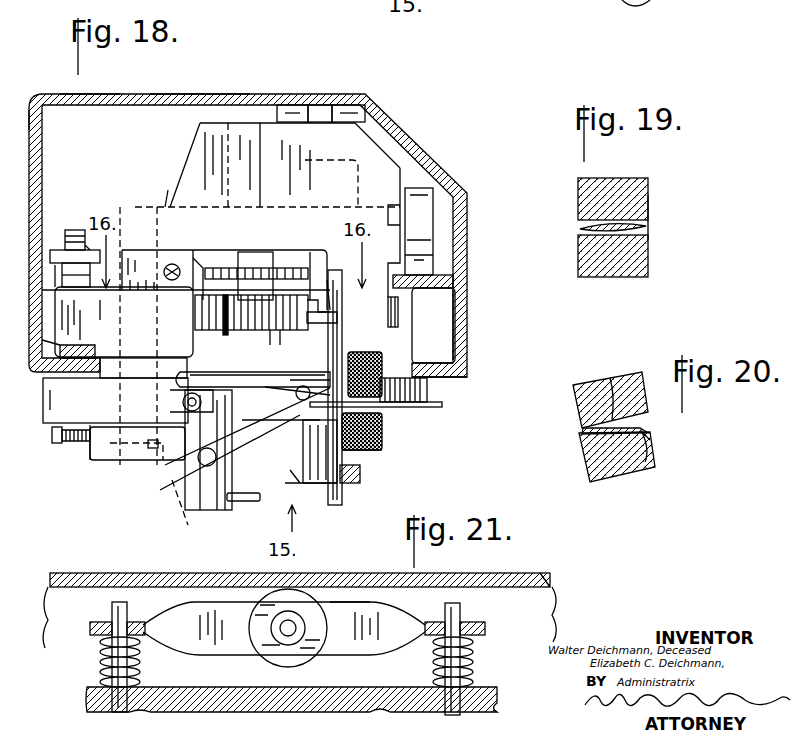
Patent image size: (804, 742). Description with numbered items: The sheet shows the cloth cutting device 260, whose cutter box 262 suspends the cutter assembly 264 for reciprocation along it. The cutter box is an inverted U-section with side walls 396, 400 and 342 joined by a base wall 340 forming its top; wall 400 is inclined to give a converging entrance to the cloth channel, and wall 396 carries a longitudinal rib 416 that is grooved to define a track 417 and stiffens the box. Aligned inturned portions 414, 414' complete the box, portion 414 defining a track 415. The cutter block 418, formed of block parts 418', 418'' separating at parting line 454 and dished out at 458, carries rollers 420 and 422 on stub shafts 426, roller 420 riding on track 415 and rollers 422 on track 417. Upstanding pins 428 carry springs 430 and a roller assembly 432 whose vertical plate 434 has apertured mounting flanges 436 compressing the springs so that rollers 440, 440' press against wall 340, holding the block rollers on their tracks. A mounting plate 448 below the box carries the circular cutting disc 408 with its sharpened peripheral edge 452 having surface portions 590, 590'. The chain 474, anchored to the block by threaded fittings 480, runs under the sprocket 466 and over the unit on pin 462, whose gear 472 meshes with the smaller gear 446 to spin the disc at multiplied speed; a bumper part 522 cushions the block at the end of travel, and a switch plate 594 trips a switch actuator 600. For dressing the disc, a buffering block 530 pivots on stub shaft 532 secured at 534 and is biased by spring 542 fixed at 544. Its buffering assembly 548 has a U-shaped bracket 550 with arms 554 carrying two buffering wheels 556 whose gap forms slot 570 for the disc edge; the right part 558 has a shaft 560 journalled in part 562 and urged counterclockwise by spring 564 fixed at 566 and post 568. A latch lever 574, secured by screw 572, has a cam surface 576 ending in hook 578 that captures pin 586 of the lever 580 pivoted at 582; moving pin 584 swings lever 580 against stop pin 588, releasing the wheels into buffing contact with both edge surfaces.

In FIG. 18, the cloth cutting device 260 is at (405, 100).
In FIG. 21, the cloth cutting device 260 is at (568, 584).
In FIG. 18, the cutter box 262 is at (73, 91).
In FIG. 21, the cutter box 262 is at (88, 572).
In FIG. 18, the cutter assembly 264 is at (163, 197).
In FIG. 21, the cutter assembly 264 is at (83, 706).
In FIG. 18, the base wall 340 is at (172, 92).
In FIG. 18, the side wall 342 is at (27, 110).
In FIG. 18, the wall of cutter box 396 is at (460, 350).
In FIG. 18, the inclined wall portion 400 is at (404, 160).
In FIG. 18, the circular cutting disc 408 is at (420, 403).
In FIG. 18, the inturned portion 414 is at (50, 369).
In FIG. 18, the inturned portion 414' is at (462, 371).
In FIG. 18, the track 415 is at (70, 352).
In FIG. 18, the longitudinal rib 416 is at (458, 282).
In FIG. 18, the track 417 is at (430, 262).
In FIG. 18, the cutter block 418 is at (418, 142).
In FIG. 18, the block part 418' is at (181, 162).
In FIG. 18, the block part 418'' is at (186, 322).
In FIG. 18, the roller 420 is at (68, 280).
In FIG. 18, the roller 422 is at (440, 190).
In FIG. 18, the stub shaft 426 is at (392, 215).
In FIG. 21, the upstanding pin 428 is at (112, 640).
In FIG. 21, the spring 430 is at (154, 672).
In FIG. 21, the roller assembly 432 is at (376, 600).
In FIG. 21, the vertical plate 434 is at (372, 630).
In FIG. 21, the apertured mounting flange 436 is at (140, 625).
In FIG. 18, the roller 440 is at (304, 90).
In FIG. 18, the roller 440' is at (350, 87).
In FIG. 21, the roller 440' is at (299, 603).
In FIG. 18, the gear 446 is at (398, 312).
In FIG. 18, the mounting plate 448 is at (395, 378).
In FIG. 19, the sharpened peripheral edge 452 is at (645, 218).
In FIG. 20, the sharpened peripheral edge 452 is at (640, 430).
In FIG. 18, the parting line 454 is at (200, 262).
In FIG. 18, the dished out portion 458 is at (225, 238).
In FIG. 18, the upstanding pin 462 is at (246, 266).
In FIG. 18, the sprocket 466 is at (272, 280).
In FIG. 18, the gear 472 is at (318, 290).
In FIG. 18, the chain 474 is at (172, 262).
In FIG. 18, the threaded fitting 480 is at (138, 260).
In FIG. 18, the bumper part 522 is at (272, 104).
In FIG. 18, the buffering block 530 is at (45, 398).
In FIG. 18, the stub shaft 532 is at (130, 368).
In FIG. 18, the stub shaft securing point 534 is at (80, 232).
In FIG. 18, the spring 542 is at (78, 455).
In FIG. 18, the spring fixing point 544 is at (48, 452).
In FIG. 18, the buffering assembly 548 is at (387, 464).
In FIG. 18, the U-shaped bracket 550 is at (312, 328).
In FIG. 18, the arm 554 is at (360, 300).
In FIG. 18, the buffering wheel 556 is at (380, 358).
In FIG. 19, the buffering wheel 556 is at (648, 190).
In FIG. 20, the buffering wheel 556 is at (632, 372).
In FIG. 18, the right part of bracket 558 is at (295, 486).
In FIG. 18, the laterally projecting shaft 560 is at (310, 372).
In FIG. 18, the part of buffering block 562 is at (325, 318).
In FIG. 18, the spring 564 is at (244, 332).
In FIG. 18, the spring fixing point 566 is at (335, 318).
In FIG. 18, the post 568 is at (230, 333).
In FIG. 19, the slot 570 is at (645, 230).
In FIG. 20, the slot 570 is at (580, 432).
In FIG. 18, the screw 572 is at (322, 451).
In FIG. 18, the latch lever 574 is at (258, 386).
In FIG. 18, the cam surface 576 is at (296, 393).
In FIG. 18, the hook-shaped portion 578 is at (178, 392).
In FIG. 18, the lever 580 is at (200, 508).
In FIG. 18, the pivot mounting point 582 is at (200, 462).
In FIG. 18, the pin 584 is at (160, 521).
In FIG. 18, the pin 586 is at (183, 402).
In FIG. 18, the stop pin 588 is at (150, 448).
In FIG. 20, the surface portion 590 is at (597, 382).
In FIG. 20, the surface portion 590' is at (682, 445).
In FIG. 18, the switch plate 594 is at (52, 260).
In FIG. 18, the actuator 600 is at (78, 230).